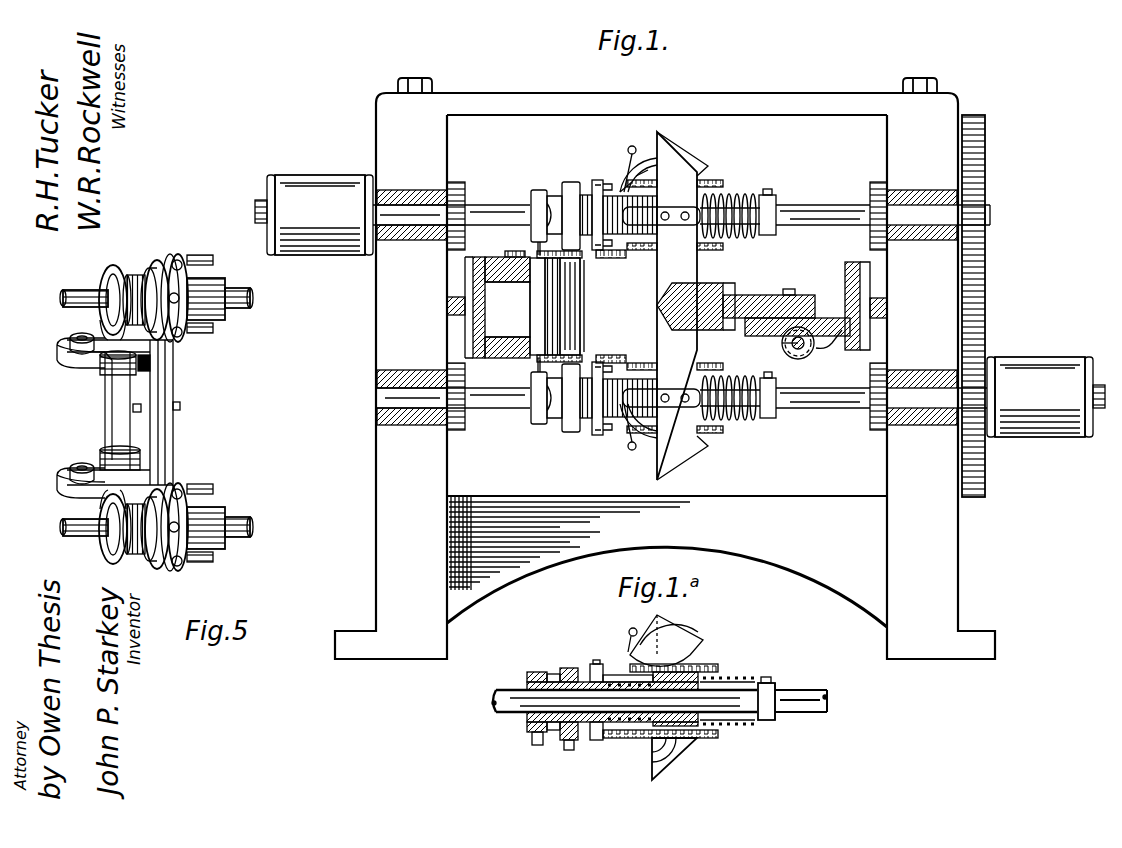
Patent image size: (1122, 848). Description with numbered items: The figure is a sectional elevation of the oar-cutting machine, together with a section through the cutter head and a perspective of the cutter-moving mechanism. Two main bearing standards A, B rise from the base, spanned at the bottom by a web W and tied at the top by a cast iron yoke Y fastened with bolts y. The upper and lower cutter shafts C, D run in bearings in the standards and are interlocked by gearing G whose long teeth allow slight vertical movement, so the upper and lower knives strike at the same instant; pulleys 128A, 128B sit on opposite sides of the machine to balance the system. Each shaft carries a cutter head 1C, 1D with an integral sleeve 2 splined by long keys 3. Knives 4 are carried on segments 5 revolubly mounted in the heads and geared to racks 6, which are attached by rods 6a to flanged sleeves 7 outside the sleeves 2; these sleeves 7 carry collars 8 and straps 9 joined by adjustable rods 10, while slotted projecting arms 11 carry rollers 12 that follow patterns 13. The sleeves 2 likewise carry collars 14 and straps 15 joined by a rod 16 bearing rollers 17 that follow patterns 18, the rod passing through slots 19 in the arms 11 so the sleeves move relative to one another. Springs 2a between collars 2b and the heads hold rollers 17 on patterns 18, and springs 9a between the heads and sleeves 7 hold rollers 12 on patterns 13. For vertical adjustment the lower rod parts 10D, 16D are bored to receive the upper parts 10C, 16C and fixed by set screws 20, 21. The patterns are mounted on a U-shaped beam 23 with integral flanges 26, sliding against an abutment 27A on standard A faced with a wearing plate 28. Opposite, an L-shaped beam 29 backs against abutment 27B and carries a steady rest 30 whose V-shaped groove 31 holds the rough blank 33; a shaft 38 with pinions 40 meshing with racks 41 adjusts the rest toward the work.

In FIG. 1, the yoke Y is at (735, 96).
In FIG. 1, the bolts y is at (434, 80).
In FIG. 1, the main bearing standard A is at (391, 387).
In FIG. 1, the main bearing standard B is at (941, 387).
In FIG. 1, the web W is at (667, 561).
In FIG. 1, the gearing G is at (986, 306).
In FIG. 1, the cutter shaft C is at (812, 208).
In FIG. 1A, the cutter shaft C is at (824, 694).
In FIG. 1, the cutter shaft D is at (796, 406).
In FIG. 1, the pulley 128A is at (314, 206).
In FIG. 1, the pulley 128B is at (1046, 410).
In FIG. 1, the cutter head 1C is at (700, 172).
In FIG. 1A, the cutter head 1C is at (670, 768).
In FIG. 1, the cutter head 1D is at (686, 455).
In FIG. 1, the sleeves 2 is at (553, 196).
In FIG. 1A, the sleeves 2 is at (550, 735).
In FIG. 5, the sleeves 2 is at (218, 280).
In FIG. 1, the springs 2a is at (730, 198).
In FIG. 1A, the springs 2a is at (748, 686).
In FIG. 1, the collars 2b is at (772, 196).
In FIG. 1A, the collars 2b is at (776, 720).
In FIG. 1, the long keys 3 is at (522, 208).
In FIG. 1A, the long keys 3 is at (500, 712).
In FIG. 5, the long keys 3 is at (238, 290).
In FIG. 1, the knives 4 is at (670, 158).
In FIG. 1A, the knives 4 is at (680, 636).
In FIG. 1, the segments 5 is at (630, 147).
In FIG. 1A, the segments 5 is at (630, 630).
In FIG. 1, the racks 6 is at (720, 368).
In FIG. 1A, the racks 6 is at (718, 670).
In FIG. 5, the rods 6a is at (198, 258).
In FIG. 1A, the flanged sleeves 7 is at (598, 664).
In FIG. 1, the collars 8 is at (588, 196).
In FIG. 1A, the collars 8 is at (578, 745).
In FIG. 5, the collars 8 is at (136, 275).
In FIG. 1, the straps 9 is at (571, 182).
In FIG. 1A, the straps 9 is at (570, 668).
In FIG. 5, the straps 9 is at (158, 260).
In FIG. 1, the springs 9a is at (620, 250).
In FIG. 1A, the springs 9a is at (632, 738).
In FIG. 1, the adjustable rods 10 is at (575, 322).
In FIG. 5, the adjustable rods 10 is at (173, 383).
In FIG. 5, the upper rod 10C is at (178, 340).
In FIG. 5, the lower rod 10D is at (172, 466).
In FIG. 5, the projecting arms 11 is at (62, 350).
In FIG. 5, the rollers 12 is at (72, 358).
In FIG. 1, the patterns 13 is at (490, 257).
In FIG. 1, the collars 14 is at (534, 190).
In FIG. 1A, the collars 14 is at (527, 677).
In FIG. 5, the collars 14 is at (102, 278).
In FIG. 1, the straps 15 is at (545, 190).
In FIG. 1A, the straps 15 is at (542, 672).
In FIG. 5, the straps 15 is at (113, 266).
In FIG. 1, the rod 16 is at (552, 300).
In FIG. 5, the rod 16 is at (112, 405).
In FIG. 5, the upper rod 16C is at (108, 372).
In FIG. 5, the lower rod 16D is at (130, 452).
In FIG. 1, the rollers 17 is at (580, 340).
In FIG. 5, the rollers 17 is at (160, 366).
In FIG. 1, the patterns 18 is at (470, 262).
In FIG. 5, the slots 19 is at (100, 348).
In FIG. 5, the set screw 20 is at (141, 408).
In FIG. 5, the set screw 21 is at (180, 402).
In FIG. 1, the U-shaped steel beam 23 is at (475, 284).
In FIG. 1, the flanges 26 is at (472, 342).
In FIG. 1, the abutment 27A is at (450, 292).
In FIG. 1, the abutment 27B is at (878, 278).
In FIG. 1, the wearing plate 28 is at (462, 322).
In FIG. 1, the L-shaped beam 29 is at (832, 345).
In FIG. 1, the steady rest 30 is at (755, 295).
In FIG. 1, the V-shaped groove 31 is at (730, 295).
In FIG. 1, the rough blank 33 is at (704, 283).
In FIG. 1, the shaft 38 is at (782, 343).
In FIG. 1, the pinions 40 is at (798, 360).
In FIG. 1, the racks 41 is at (745, 326).